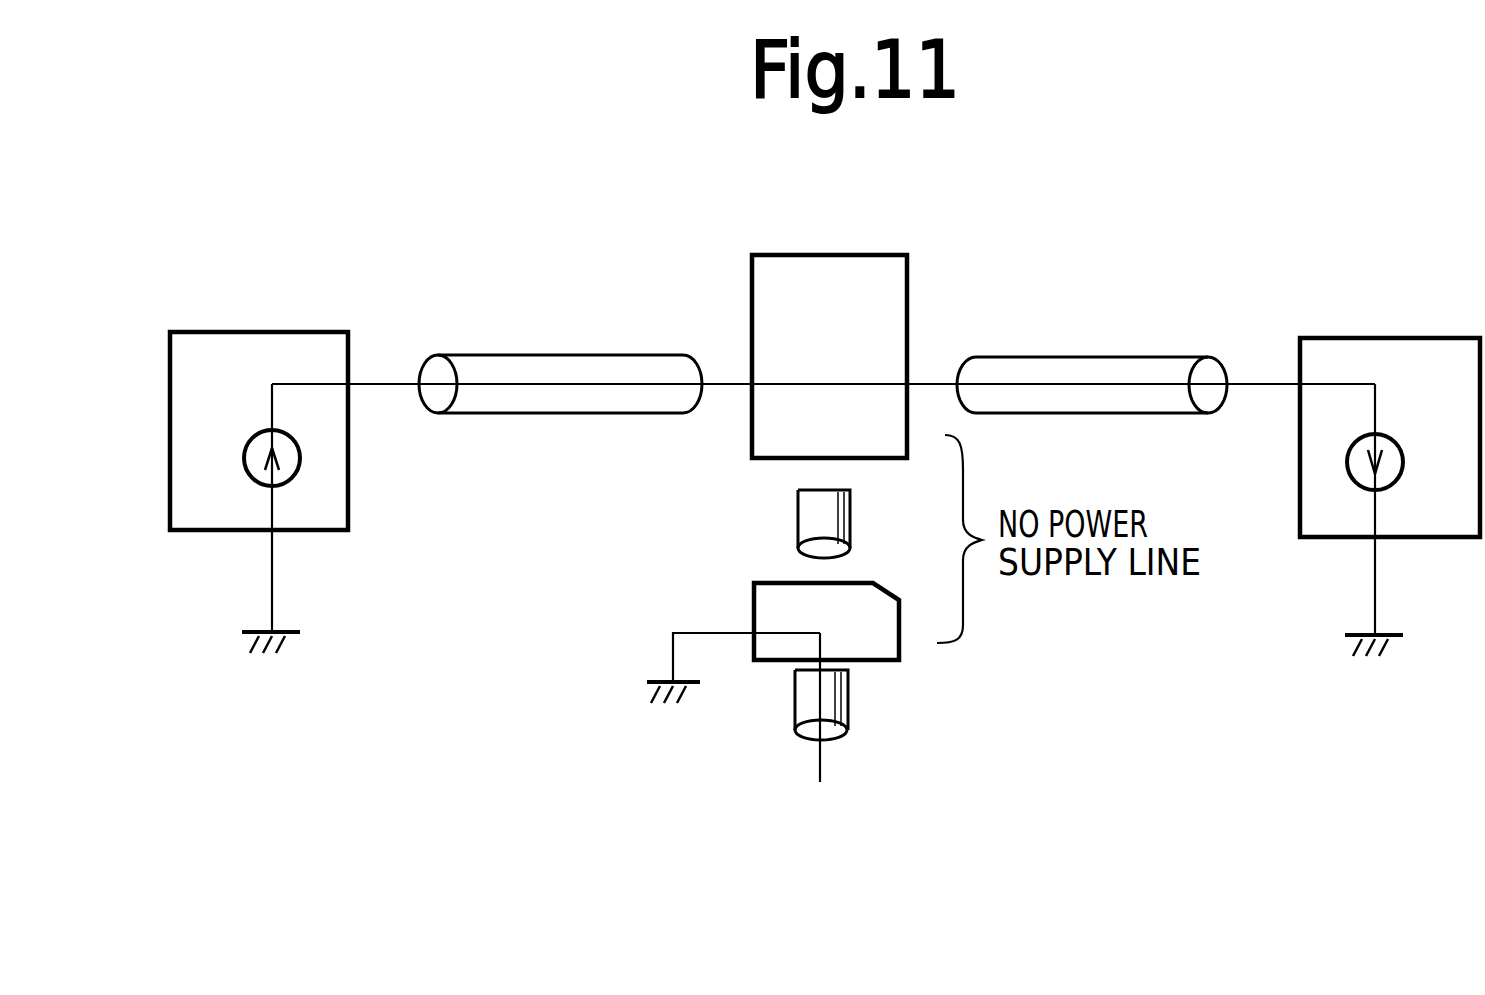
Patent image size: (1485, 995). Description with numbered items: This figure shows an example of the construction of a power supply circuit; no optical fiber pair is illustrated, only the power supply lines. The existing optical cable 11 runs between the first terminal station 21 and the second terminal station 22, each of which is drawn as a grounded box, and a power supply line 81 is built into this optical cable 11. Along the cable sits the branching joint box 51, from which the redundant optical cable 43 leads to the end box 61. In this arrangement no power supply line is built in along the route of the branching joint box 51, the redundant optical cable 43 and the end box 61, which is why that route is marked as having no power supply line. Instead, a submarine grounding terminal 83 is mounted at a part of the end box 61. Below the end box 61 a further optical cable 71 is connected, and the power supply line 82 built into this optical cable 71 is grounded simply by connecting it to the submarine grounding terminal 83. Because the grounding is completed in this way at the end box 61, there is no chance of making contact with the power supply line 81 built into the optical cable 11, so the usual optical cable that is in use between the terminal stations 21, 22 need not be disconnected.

The optical cable 11 is at (560, 355).
The first terminal station 21 is at (262, 332).
The second terminal station 22 is at (1383, 338).
The redundant optical cable 43 is at (798, 497).
The branching joint box 51 is at (826, 255).
The end box 61 is at (873, 583).
The optical cable 71 is at (848, 700).
The power supply line 81 is at (931, 384).
The power supply line 82 is at (815, 697).
The submarine grounding terminal 83 is at (718, 633).